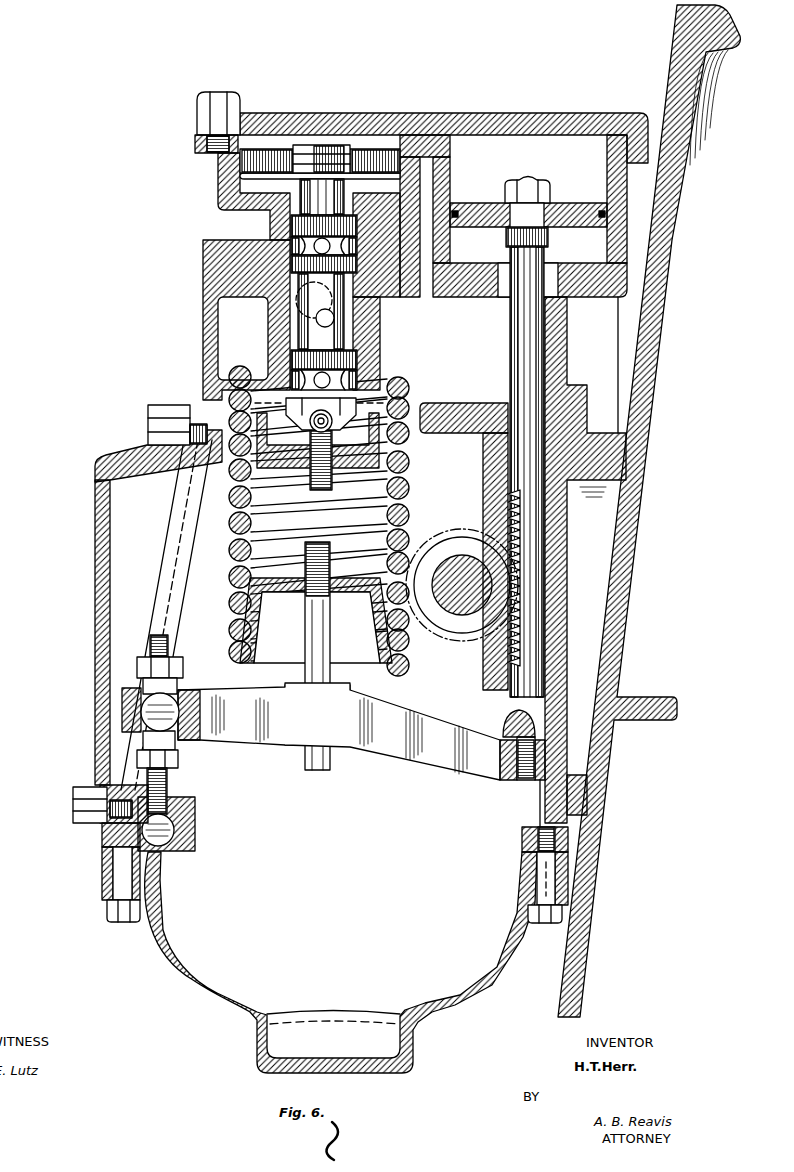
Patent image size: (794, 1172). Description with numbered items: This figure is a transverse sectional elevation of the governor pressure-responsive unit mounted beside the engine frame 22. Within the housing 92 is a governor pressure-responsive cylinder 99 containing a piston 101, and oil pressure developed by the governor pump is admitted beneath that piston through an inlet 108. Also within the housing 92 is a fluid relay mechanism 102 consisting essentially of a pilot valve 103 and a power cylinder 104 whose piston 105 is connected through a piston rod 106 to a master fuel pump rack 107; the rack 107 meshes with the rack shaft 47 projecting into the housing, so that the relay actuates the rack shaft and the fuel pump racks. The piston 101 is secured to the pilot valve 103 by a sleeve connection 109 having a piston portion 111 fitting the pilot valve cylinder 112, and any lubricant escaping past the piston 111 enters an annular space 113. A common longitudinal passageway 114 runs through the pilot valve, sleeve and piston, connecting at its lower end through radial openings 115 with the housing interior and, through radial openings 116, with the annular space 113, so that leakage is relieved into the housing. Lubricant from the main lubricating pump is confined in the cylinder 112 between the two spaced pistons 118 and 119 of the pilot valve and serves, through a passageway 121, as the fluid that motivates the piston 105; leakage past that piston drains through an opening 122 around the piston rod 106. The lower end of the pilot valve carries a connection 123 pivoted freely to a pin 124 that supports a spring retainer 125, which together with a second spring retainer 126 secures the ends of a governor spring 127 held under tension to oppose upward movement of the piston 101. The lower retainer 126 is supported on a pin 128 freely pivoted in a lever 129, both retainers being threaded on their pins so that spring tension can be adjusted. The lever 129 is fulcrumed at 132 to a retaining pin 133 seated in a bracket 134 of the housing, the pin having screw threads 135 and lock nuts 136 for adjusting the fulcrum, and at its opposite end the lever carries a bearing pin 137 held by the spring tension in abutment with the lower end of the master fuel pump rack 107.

The frame 22 is at (632, 601).
The rack shaft 47 is at (460, 525).
The housing 92 is at (96, 307).
The governor pressure-responsive cylinder 99 is at (216, 175).
The piston 101 is at (260, 150).
The fluid relay mechanism 102 is at (452, 180).
The pilot valve 103 is at (296, 303).
The power cylinder 104 is at (495, 163).
The piston 105 is at (470, 203).
The piston rod 106 is at (520, 340).
The master fuel pump rack 107 is at (528, 547).
The inlet 108 is at (262, 212).
The sleeve connection 109 is at (345, 207).
The piston portion 111 is at (356, 232).
The pilot valve cylinder 112 is at (298, 283).
The annular space 113 is at (248, 261).
The passageway 114 is at (334, 321).
The radial openings 115 is at (348, 378).
The radial openings 116 is at (358, 250).
The piston 118 is at (403, 295).
The piston 119 is at (317, 332).
The passageway 121 is at (420, 252).
The opening 122 is at (507, 296).
The connection 123 is at (410, 390).
The pin 124 is at (410, 447).
The spring retainer 125 is at (147, 440).
The spring retainer 126 is at (240, 615).
The governor spring 127 is at (230, 530).
The pin 128 is at (330, 673).
The lever 129 is at (362, 747).
The fulcrum 132 is at (177, 733).
The retaining pin 133 is at (170, 782).
The bracket 134 is at (197, 840).
The screw threads 135 is at (147, 773).
The lock nuts 136 is at (148, 690).
The bearing pin 137 is at (505, 722).